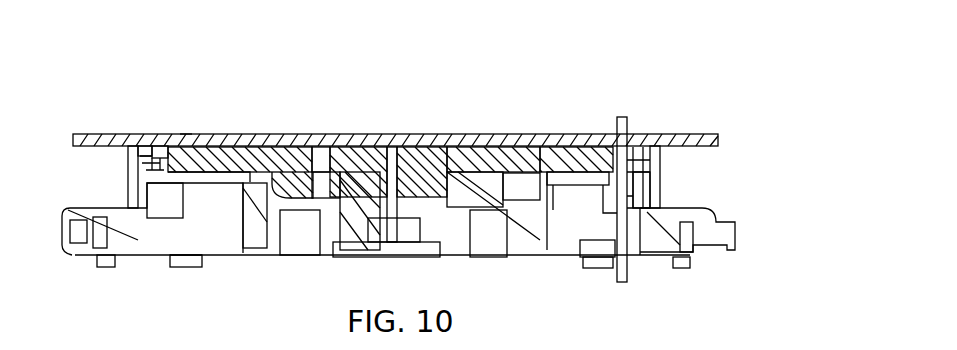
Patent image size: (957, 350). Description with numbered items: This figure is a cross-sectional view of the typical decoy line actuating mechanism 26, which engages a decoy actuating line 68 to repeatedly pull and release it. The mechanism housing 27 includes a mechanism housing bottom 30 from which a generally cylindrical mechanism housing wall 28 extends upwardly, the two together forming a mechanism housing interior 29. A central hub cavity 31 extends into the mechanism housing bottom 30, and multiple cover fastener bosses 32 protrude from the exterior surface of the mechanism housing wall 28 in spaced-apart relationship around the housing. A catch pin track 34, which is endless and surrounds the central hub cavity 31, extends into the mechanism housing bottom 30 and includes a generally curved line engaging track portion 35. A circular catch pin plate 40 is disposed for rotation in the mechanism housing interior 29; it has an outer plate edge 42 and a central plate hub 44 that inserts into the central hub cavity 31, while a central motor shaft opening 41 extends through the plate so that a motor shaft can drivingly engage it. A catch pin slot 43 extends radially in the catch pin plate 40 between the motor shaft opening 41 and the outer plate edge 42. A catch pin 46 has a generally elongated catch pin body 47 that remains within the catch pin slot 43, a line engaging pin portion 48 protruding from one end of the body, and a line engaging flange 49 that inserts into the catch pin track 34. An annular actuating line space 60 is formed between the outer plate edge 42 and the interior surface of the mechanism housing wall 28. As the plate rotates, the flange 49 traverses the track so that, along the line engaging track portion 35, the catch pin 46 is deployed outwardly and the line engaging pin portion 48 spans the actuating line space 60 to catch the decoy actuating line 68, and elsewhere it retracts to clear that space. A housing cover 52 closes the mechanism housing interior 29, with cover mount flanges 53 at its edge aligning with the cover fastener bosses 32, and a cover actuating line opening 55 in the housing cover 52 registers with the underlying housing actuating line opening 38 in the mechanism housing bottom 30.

The decoy line actuating mechanism 26 is at (713, 50).
The mechanism housing 27 is at (735, 215).
The mechanism housing wall 28 is at (645, 170).
The mechanism housing interior 29 is at (548, 160).
The mechanism housing bottom 30 is at (473, 190).
The central hub cavity 31 is at (428, 183).
The cover fastener bosses 32 is at (128, 178).
The catch pin track 34 is at (318, 202).
The line engaging track portion 35 is at (318, 200).
The housing actuating line opening 38 is at (617, 227).
The catch pin plate 40 is at (358, 134).
The central motor shaft opening 41 is at (386, 172).
The outer plate edge 42 is at (660, 150).
The catch pin slot 43 is at (218, 150).
The central plate hub 44 is at (372, 178).
The catch pin 46 is at (188, 134).
The catch pin body 47 is at (184, 132).
The line engaging pin portion 48 is at (150, 155).
The line engaging flange 49 is at (262, 200).
The housing cover 52 is at (617, 160).
The cover mount flanges 53 is at (87, 134).
The cover actuating line opening 55 is at (627, 131).
The annular actuating line space 60 is at (140, 140).
The decoy actuating line 68 is at (620, 234).